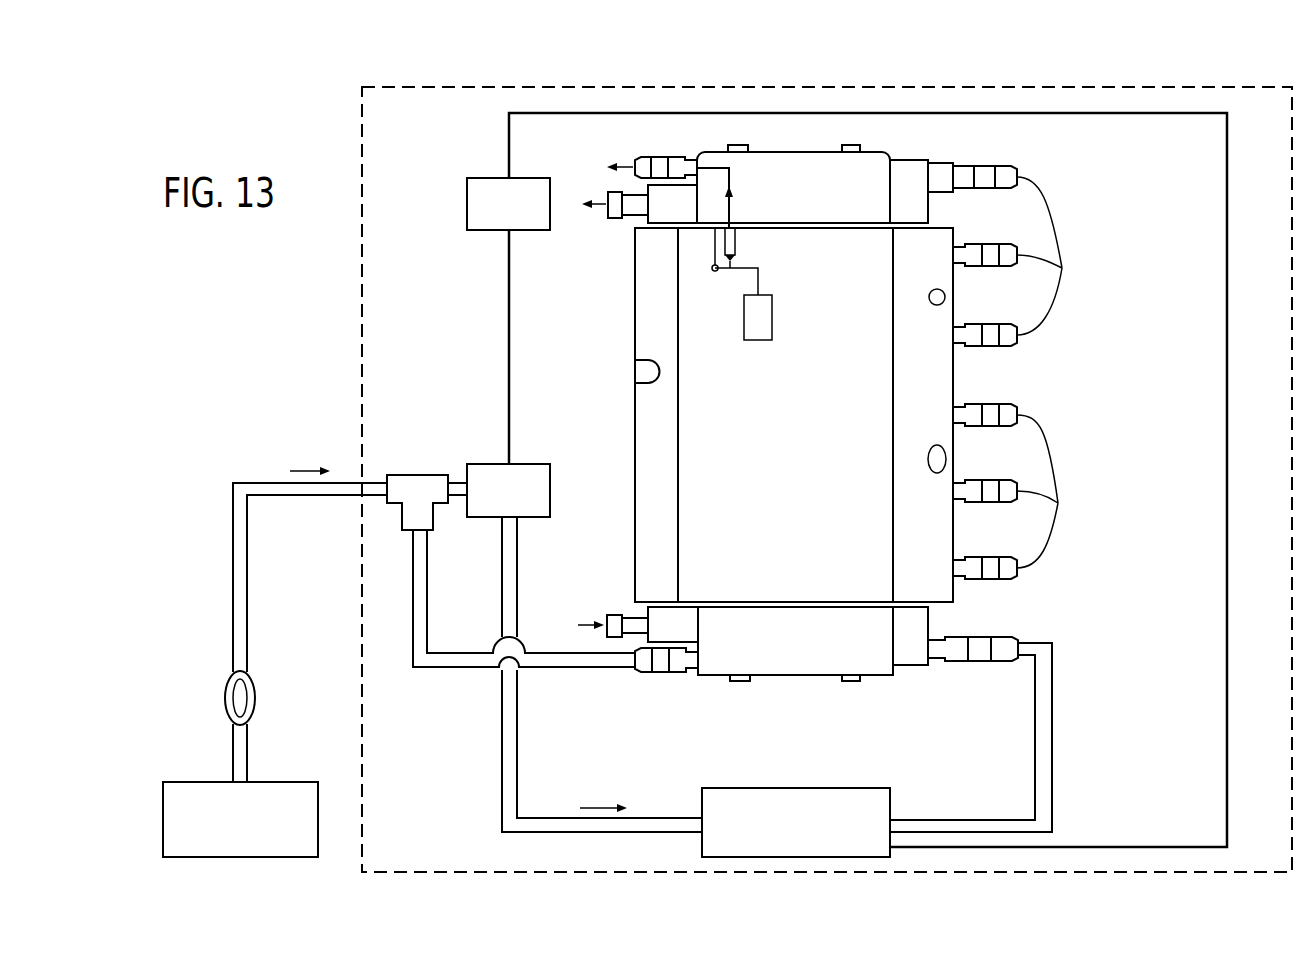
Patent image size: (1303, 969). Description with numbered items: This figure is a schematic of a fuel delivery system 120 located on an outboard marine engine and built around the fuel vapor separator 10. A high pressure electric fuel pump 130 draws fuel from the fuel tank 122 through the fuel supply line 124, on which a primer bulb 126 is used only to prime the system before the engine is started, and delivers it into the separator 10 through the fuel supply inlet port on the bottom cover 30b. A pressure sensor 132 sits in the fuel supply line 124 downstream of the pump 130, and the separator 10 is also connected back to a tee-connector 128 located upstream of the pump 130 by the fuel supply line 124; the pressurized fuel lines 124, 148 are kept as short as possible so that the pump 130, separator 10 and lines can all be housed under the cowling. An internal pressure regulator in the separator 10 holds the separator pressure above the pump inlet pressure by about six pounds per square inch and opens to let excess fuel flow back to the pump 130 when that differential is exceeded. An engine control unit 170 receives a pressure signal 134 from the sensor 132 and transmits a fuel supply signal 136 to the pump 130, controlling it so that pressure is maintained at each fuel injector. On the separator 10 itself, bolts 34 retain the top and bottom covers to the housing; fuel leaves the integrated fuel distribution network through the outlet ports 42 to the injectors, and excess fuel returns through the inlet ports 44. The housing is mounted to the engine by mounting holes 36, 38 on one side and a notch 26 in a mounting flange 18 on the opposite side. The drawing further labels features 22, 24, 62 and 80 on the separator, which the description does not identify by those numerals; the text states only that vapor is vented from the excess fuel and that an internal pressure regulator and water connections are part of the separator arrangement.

The fuel vapor separator 10 is at (796, 445).
The mounting flange 18 is at (653, 442).
The water inlet fitting 22 is at (622, 615).
The water outlet fitting 24 is at (635, 205).
The notch 26 is at (638, 367).
The bottom cover 30b is at (787, 152).
The bolts 34 is at (740, 145).
The mounting hole 36 is at (946, 459).
The mounting hole 38 is at (945, 297).
The outlet ports 42 is at (1010, 532).
The inlet ports 44 is at (1010, 254).
The pressure regulator 62 is at (744, 318).
The check valve 80 is at (737, 243).
The fuel delivery system 120 is at (335, 140).
The fuel tank 122 is at (205, 780).
The fuel supply line 124 is at (233, 575).
The primer bulb 126 is at (250, 677).
The tee-connector 128 is at (418, 475).
The high pressure electric fuel pump 130 is at (550, 485).
The pressure sensor 132 is at (730, 788).
The pressure signal 134 is at (753, 112).
The fuel supply signal 136 is at (509, 376).
The pressurized fuel line 148 is at (430, 580).
The engine control unit 170 is at (467, 202).